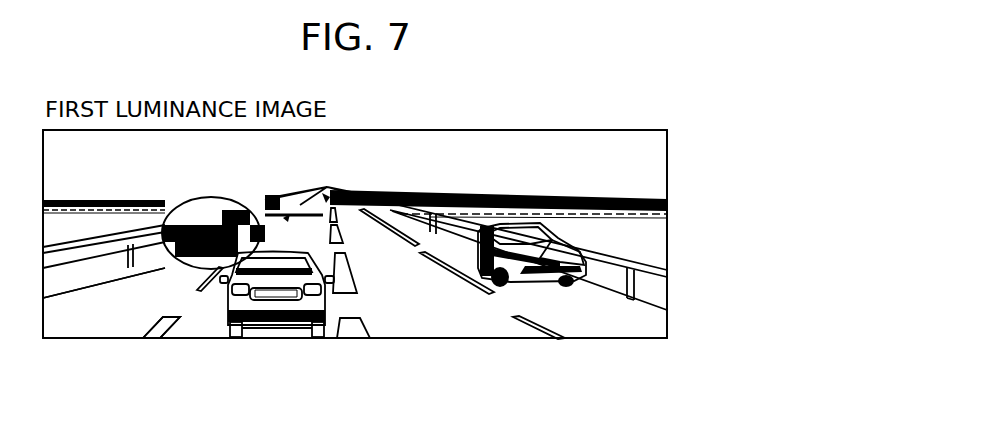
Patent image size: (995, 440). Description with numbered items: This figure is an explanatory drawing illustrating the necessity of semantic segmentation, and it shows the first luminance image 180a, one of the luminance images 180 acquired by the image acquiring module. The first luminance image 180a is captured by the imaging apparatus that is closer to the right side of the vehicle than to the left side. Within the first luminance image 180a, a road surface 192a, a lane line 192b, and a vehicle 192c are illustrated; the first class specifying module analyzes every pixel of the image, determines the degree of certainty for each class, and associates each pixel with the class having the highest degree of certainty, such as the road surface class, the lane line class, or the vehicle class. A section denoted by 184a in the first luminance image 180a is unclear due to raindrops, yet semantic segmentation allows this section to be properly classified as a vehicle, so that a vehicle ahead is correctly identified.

The first luminance image 180a is at (560, 113).
The luminance image 180 is at (355, 214).
The section unclear due to raindrops 184a is at (223, 194).
The road surface 192a is at (70, 322).
The lane line 192b is at (140, 333).
The vehicle 192c is at (317, 327).